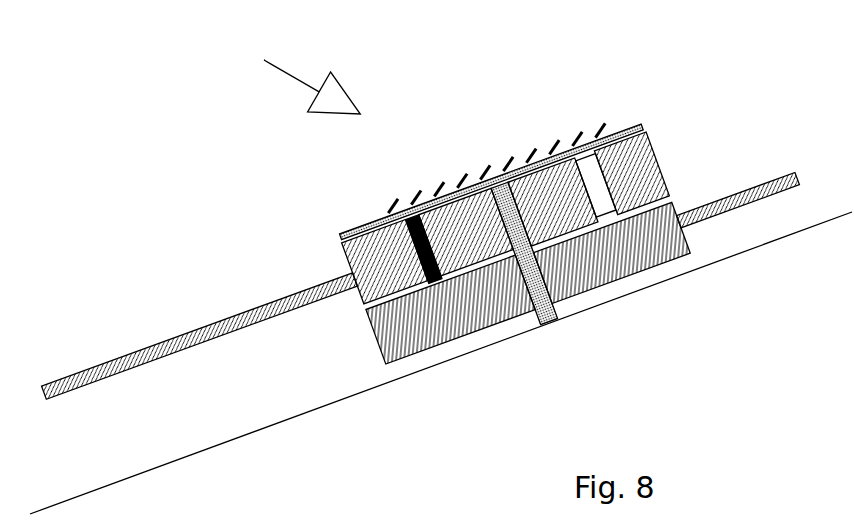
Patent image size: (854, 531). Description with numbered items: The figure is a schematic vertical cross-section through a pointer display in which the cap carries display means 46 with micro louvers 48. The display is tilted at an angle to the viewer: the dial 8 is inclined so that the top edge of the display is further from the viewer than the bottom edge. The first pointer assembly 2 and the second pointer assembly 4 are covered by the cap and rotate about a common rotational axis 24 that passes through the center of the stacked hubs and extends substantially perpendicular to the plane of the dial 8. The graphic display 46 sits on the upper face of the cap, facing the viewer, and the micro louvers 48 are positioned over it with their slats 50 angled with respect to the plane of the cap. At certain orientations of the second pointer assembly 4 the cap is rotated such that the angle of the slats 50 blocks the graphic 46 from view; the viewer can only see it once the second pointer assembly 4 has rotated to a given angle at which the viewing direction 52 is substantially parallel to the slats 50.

The first pointer assembly 2 is at (418, 280).
The second pointer assembly 4 is at (450, 309).
The dial face 8 is at (721, 262).
The rotational axis 24 is at (524, 253).
The display means 46 is at (492, 181).
The micro louvers 48 is at (497, 168).
The micro louver slats 50 is at (496, 162).
The viewing direction 52 is at (291, 96).